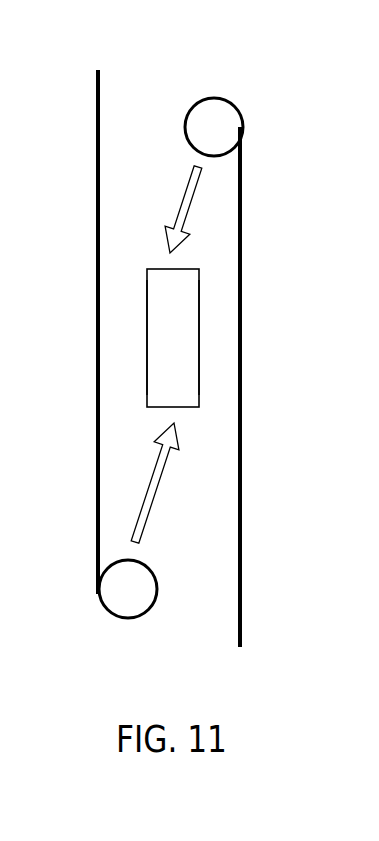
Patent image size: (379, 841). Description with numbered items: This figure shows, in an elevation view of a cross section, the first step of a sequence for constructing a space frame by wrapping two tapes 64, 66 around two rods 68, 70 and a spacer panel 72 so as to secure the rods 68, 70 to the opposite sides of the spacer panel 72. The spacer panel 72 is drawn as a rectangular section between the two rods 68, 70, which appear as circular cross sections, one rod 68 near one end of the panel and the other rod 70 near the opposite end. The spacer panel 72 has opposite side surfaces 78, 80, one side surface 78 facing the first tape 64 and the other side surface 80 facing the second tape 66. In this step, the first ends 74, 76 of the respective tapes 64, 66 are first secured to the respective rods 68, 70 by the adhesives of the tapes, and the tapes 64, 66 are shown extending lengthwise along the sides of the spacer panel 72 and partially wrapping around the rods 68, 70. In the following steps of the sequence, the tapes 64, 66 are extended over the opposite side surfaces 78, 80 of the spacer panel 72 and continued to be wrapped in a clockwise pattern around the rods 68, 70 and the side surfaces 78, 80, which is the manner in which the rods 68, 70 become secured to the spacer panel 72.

The tape 64 is at (96, 450).
The tape 66 is at (243, 455).
The rod 68 is at (113, 570).
The rod 70 is at (225, 145).
The spacer panel 72 is at (180, 358).
The first end of tape 74 is at (135, 565).
The first end of tape 76 is at (194, 153).
The side surface of spacer panel 78 is at (146, 333).
The side surface of spacer panel 80 is at (200, 309).